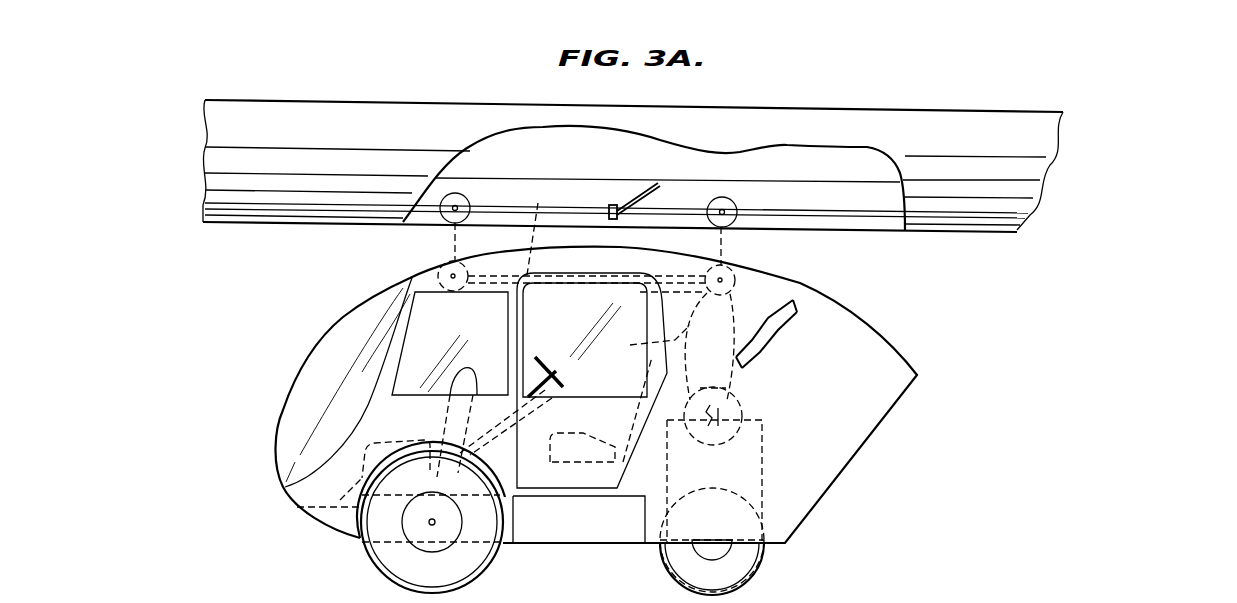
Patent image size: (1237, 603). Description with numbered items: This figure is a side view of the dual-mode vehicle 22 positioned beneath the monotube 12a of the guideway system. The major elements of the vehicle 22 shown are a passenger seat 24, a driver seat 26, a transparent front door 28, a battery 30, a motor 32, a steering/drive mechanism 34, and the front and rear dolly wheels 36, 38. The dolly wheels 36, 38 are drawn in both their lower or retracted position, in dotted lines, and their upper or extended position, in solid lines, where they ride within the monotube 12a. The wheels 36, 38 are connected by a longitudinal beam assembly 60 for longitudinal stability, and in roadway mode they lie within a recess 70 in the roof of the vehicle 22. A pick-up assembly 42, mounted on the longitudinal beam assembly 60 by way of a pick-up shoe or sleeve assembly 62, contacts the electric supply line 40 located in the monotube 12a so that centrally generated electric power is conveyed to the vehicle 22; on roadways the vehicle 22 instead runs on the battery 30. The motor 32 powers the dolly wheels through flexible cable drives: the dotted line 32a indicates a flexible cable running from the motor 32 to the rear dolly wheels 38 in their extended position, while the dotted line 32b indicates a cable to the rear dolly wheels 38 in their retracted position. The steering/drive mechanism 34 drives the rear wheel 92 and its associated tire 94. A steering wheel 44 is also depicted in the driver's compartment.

The monotube 12a is at (976, 234).
The vehicle 22 is at (913, 481).
The passenger seat 24 is at (318, 533).
The driver seat 26 is at (583, 430).
The transparent front door 28 is at (307, 358).
The battery 30 is at (579, 519).
The motor 32 is at (744, 409).
The flexible cable 32a is at (663, 346).
The flexible cable 32b is at (760, 365).
The steering/drive mechanism 34 is at (762, 480).
The front dolly wheels 36 is at (449, 219).
The rear dolly wheels 38 is at (735, 206).
The electric supply line 40 is at (813, 182).
The pick-up assembly 42 is at (645, 196).
The steering wheel 44 is at (546, 358).
The longitudinal beam assembly 60 is at (524, 212).
The pick-up shoe or sleeve assembly 62 is at (612, 204).
The recess 70 is at (735, 292).
The rear wheel 92 is at (724, 554).
The tire 94 is at (731, 586).